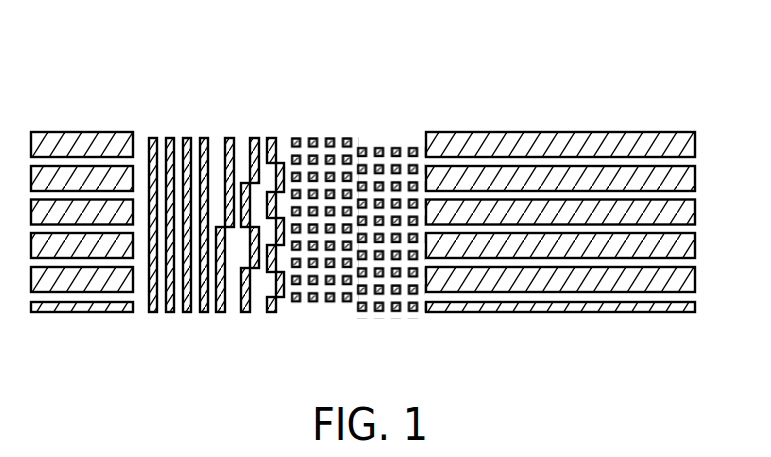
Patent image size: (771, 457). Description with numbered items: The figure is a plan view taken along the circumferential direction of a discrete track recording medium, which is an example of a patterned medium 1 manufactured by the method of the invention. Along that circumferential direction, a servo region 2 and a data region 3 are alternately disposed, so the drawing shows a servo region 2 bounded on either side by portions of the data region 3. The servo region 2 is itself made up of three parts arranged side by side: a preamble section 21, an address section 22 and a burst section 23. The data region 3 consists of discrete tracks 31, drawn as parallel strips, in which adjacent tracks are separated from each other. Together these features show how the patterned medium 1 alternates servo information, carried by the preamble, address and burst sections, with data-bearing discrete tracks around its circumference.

The patterned medium 1 is at (85, 95).
The servo region 2 is at (286, 220).
The data region 3 is at (583, 194).
The preamble section 21 is at (208, 319).
The address section 22 is at (280, 319).
The burst section 23 is at (420, 319).
The discrete tracks 31 is at (427, 120).